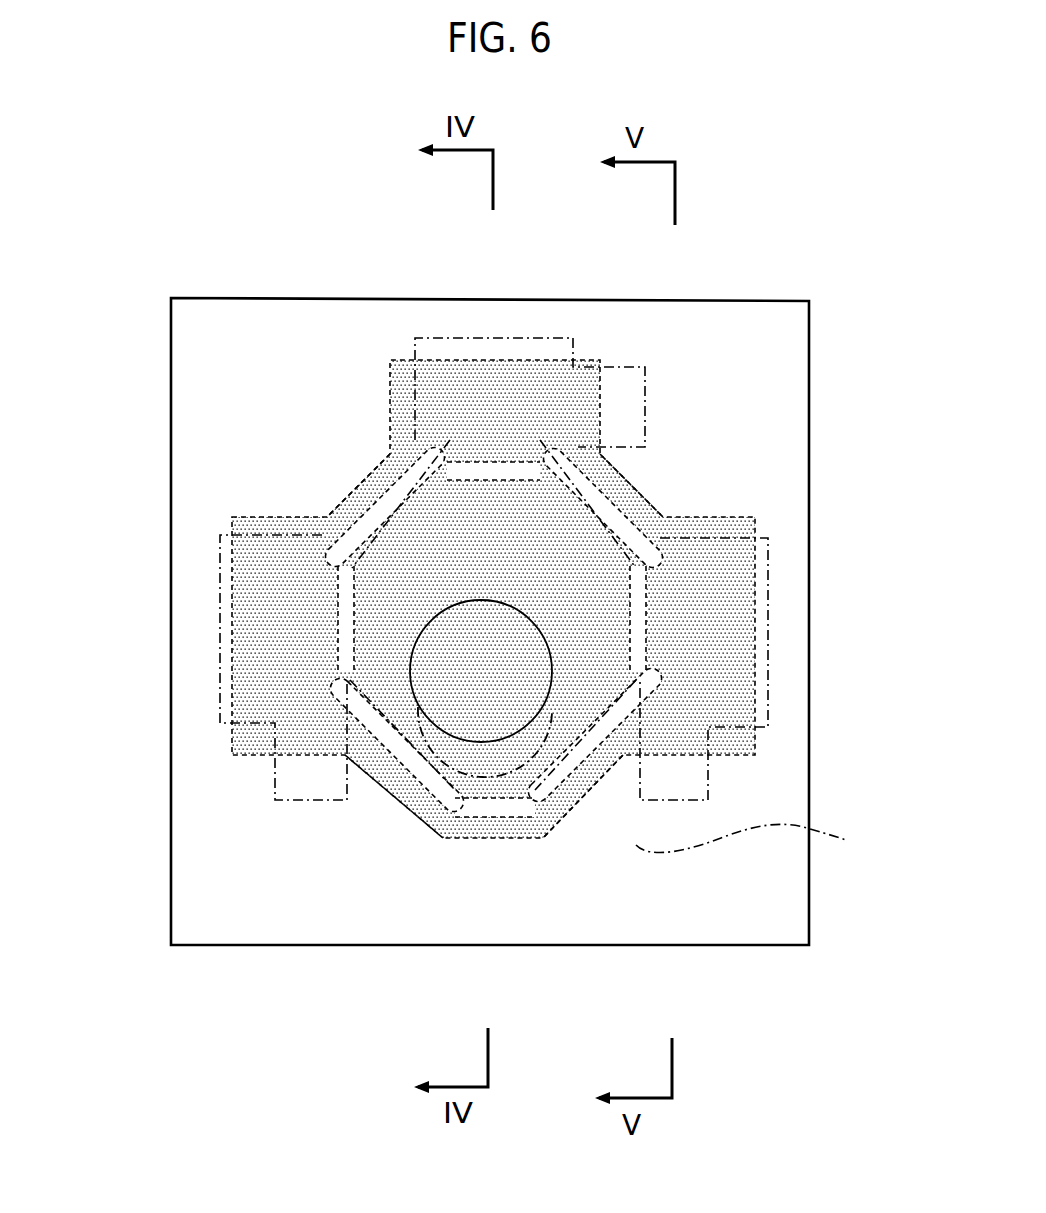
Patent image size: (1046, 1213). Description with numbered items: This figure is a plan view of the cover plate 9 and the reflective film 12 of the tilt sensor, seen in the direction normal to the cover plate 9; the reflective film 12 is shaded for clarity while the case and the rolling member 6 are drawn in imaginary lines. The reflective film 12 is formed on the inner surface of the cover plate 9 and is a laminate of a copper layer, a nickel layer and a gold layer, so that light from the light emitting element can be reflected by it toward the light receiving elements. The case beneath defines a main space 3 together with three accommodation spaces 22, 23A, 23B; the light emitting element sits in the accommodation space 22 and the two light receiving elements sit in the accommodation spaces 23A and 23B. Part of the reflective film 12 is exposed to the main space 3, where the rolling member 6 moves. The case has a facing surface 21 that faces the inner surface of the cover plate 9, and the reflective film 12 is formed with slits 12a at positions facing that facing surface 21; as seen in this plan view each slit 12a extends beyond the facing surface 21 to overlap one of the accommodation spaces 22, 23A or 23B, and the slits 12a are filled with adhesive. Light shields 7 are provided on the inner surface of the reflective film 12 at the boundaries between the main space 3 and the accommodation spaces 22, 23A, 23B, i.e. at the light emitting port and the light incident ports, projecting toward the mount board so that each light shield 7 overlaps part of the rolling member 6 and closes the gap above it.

The main space 3 is at (640, 491).
The rolling member 6 is at (495, 715).
The light shield 7 is at (466, 478).
The cover plate 9 is at (212, 899).
The reflective film 12 is at (290, 630).
The slit 12a is at (403, 477).
The facing surface 21 is at (755, 842).
The accommodation space 22 is at (530, 345).
The accommodation space 23A is at (223, 672).
The accommodation space 23B is at (760, 662).